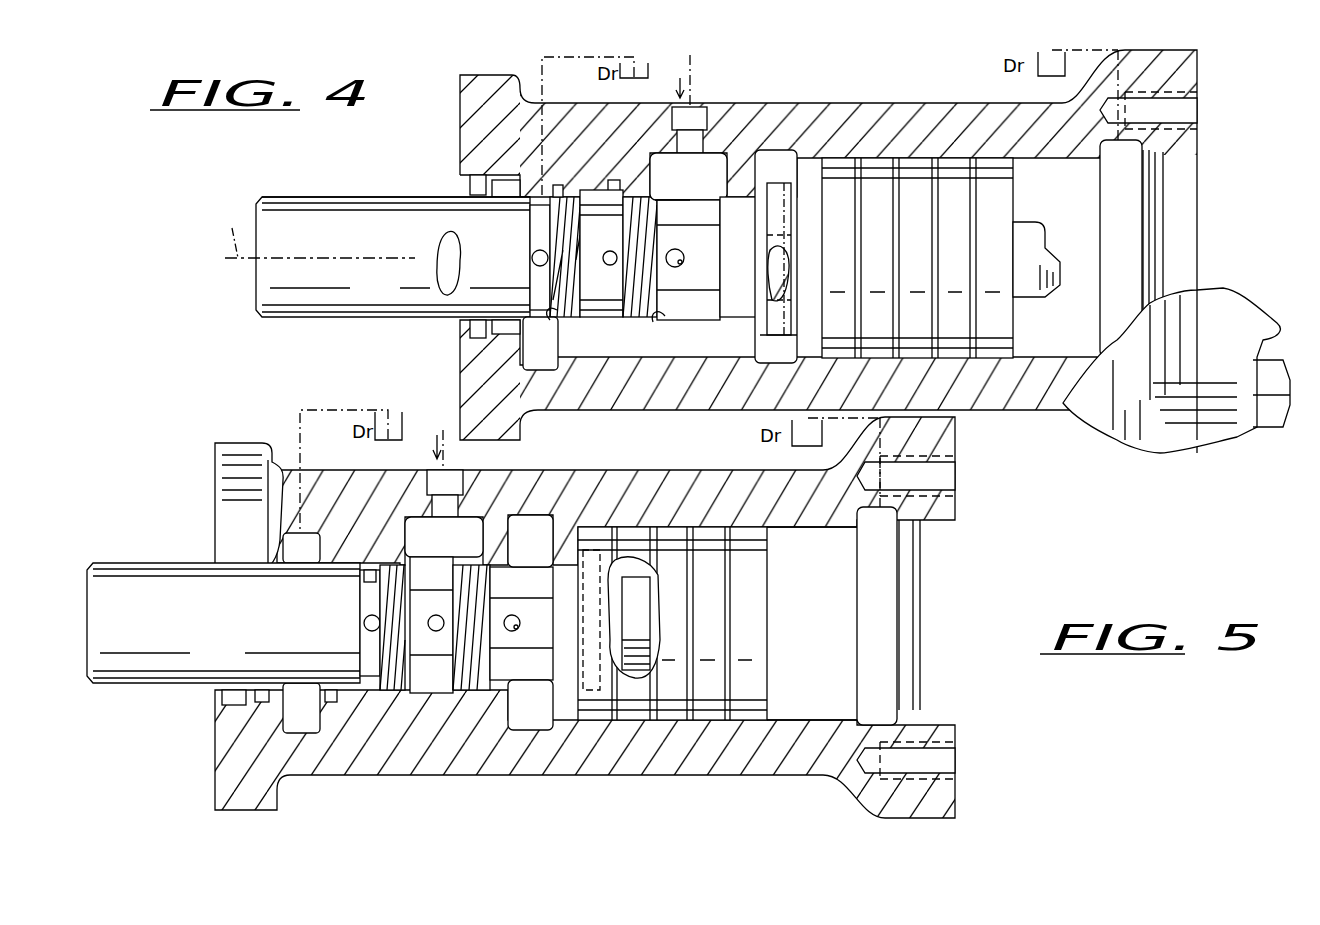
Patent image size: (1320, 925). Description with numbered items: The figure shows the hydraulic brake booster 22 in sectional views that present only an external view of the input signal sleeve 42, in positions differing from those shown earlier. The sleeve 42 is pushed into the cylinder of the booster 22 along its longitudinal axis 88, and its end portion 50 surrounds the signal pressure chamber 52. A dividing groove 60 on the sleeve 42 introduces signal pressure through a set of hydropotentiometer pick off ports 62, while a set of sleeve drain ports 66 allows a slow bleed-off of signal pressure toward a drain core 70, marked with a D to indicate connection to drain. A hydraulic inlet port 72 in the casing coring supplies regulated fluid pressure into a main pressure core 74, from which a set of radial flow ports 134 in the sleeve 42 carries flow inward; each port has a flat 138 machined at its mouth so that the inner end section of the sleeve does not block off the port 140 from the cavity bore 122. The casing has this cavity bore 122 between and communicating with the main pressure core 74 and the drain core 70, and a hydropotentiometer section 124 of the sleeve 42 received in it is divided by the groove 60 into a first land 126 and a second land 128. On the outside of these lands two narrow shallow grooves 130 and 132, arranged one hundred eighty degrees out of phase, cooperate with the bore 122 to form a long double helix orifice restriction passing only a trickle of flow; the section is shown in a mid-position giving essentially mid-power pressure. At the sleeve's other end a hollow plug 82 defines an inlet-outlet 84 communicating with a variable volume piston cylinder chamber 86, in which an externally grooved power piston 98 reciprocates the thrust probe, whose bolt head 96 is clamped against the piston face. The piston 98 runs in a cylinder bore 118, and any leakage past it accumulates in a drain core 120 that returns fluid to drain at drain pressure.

In FIG. 4, the booster 22 is at (848, 103).
In FIG. 5, the booster 22 is at (662, 470).
In FIG. 4, the input signal sleeve 42 is at (387, 284).
In FIG. 5, the input signal sleeve 42 is at (232, 646).
In FIG. 4, the end portion of sleeve 50 is at (305, 197).
In FIG. 4, the signal pressure chamber 52 is at (445, 243).
In FIG. 4, the dividing groove 60 is at (582, 205).
In FIG. 4, the hydropotentiometer pick off ports 62 is at (604, 259).
In FIG. 4, the sleeve drain ports 66 is at (533, 253).
In FIG. 4, the drain core 70 is at (538, 372).
In FIG. 4, the hydraulic inlet port 72 is at (695, 103).
In FIG. 4, the main pressure core 74 is at (690, 197).
In FIG. 5, the main pressure core 74 is at (425, 560).
In FIG. 4, the plug 82 is at (778, 228).
In FIG. 4, the inlet-outlet 84 is at (786, 260).
In FIG. 4, the variable volume piston cylinder chamber 86 is at (785, 362).
In FIG. 5, the variable volume piston cylinder chamber 86 is at (565, 722).
In FIG. 4, the longitudinal axis 88 is at (219, 236).
In FIG. 5, the bolt head 96 is at (645, 590).
In FIG. 4, the power piston 98 is at (888, 249).
In FIG. 5, the power piston 98 is at (724, 634).
In FIG. 4, the cylinder bore 118 is at (1048, 357).
In FIG. 5, the cylinder bore 118 is at (822, 720).
In FIG. 4, the drain core 120 is at (1135, 148).
In FIG. 5, the drain core 120 is at (862, 730).
In FIG. 4, the cavity bore 122 is at (613, 192).
In FIG. 5, the cavity bore 122 is at (368, 592).
In FIG. 4, the hydropotentiometer section 124 is at (660, 197).
In FIG. 4, the first land 126 is at (556, 320).
In FIG. 4, the second land 128 is at (662, 320).
In FIG. 4, the narrow shallow groove 130 is at (545, 193).
In FIG. 4, the narrow shallow groove 132 is at (560, 190).
In FIG. 4, the radial flow ports 134 is at (682, 262).
In FIG. 5, the radial flow ports 134 is at (518, 628).
In FIG. 5, the flat 138 is at (522, 618).
In FIG. 5, the port 140 is at (520, 566).